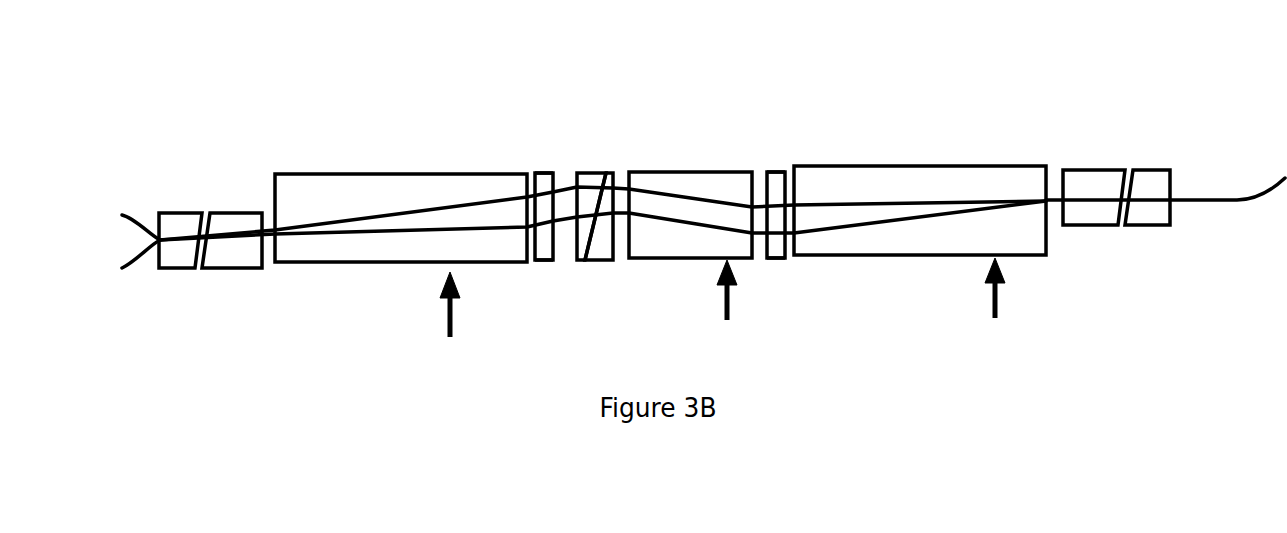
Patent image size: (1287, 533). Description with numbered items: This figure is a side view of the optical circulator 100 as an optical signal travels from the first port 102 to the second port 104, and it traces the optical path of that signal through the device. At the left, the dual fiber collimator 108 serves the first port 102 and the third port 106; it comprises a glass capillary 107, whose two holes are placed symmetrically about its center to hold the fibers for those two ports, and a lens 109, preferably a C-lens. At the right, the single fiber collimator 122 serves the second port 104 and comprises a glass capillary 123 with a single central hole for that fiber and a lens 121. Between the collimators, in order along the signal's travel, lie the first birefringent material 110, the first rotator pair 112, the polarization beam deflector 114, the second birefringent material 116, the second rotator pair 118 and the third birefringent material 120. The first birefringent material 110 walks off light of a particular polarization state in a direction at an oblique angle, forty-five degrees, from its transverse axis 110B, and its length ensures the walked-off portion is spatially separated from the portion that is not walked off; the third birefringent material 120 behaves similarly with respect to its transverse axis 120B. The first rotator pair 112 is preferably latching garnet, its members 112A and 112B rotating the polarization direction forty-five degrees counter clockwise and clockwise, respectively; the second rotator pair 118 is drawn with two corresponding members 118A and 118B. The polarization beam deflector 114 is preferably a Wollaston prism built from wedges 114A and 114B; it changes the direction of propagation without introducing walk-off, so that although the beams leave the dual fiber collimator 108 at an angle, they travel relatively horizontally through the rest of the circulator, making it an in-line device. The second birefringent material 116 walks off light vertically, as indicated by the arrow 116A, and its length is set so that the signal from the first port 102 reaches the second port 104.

The optical circulator 100 is at (675, 25).
The first port 102 is at (133, 256).
The second port 104 is at (1238, 202).
The third port 106 is at (133, 222).
The capillary 107 is at (178, 213).
The dual fiber collimator 108 is at (238, 278).
The lens 109 is at (222, 268).
The first birefringent material 110 is at (348, 174).
The transverse axis 110B is at (447, 312).
The first rotator pair 112 is at (538, 234).
The rotator 112A is at (540, 260).
The rotator 112B is at (542, 173).
The polarization beam deflector 114 is at (635, 174).
The wedge 114A is at (576, 173).
The wedge 114B is at (610, 260).
The second birefringent material 116 is at (663, 172).
The arrow 116A is at (723, 298).
The second rotator pair 118 is at (774, 229).
The first portion of wave plate 118 118A is at (773, 258).
The second portion of wave plate 118 118B is at (775, 172).
The third birefringent material 120 is at (853, 166).
The transverse axis 120B is at (992, 297).
The lens 121 is at (1098, 170).
The single fiber collimator 122 is at (1121, 214).
The capillary 123 is at (1147, 170).